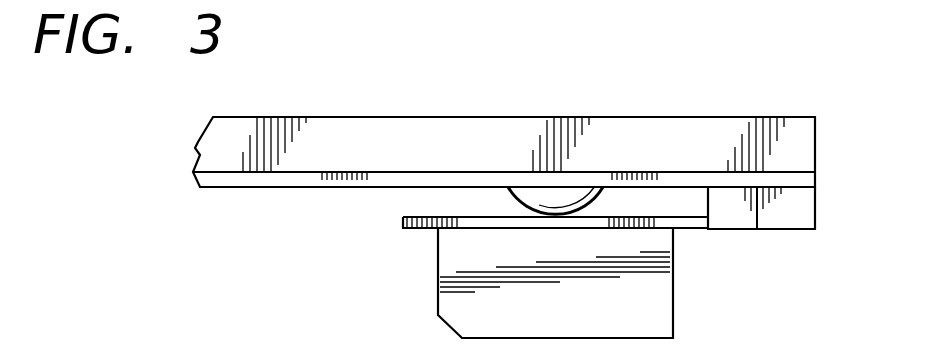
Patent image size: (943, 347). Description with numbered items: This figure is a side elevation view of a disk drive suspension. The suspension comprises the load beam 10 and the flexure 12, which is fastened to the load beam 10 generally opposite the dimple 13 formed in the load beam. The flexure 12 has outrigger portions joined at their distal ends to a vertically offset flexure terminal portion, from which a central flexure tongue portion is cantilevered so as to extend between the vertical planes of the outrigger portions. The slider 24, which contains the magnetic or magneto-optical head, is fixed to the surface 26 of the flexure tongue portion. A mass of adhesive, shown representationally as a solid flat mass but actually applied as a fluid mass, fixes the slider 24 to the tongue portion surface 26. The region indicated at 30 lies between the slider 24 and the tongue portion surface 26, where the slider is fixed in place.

The load beam 10 is at (525, 116).
The dimple 13 is at (560, 202).
The flexure 12 is at (766, 232).
The surface of the flexure tongue portion 26 is at (418, 230).
The slider 24 is at (673, 270).
The interface / joint 30 is at (547, 229).